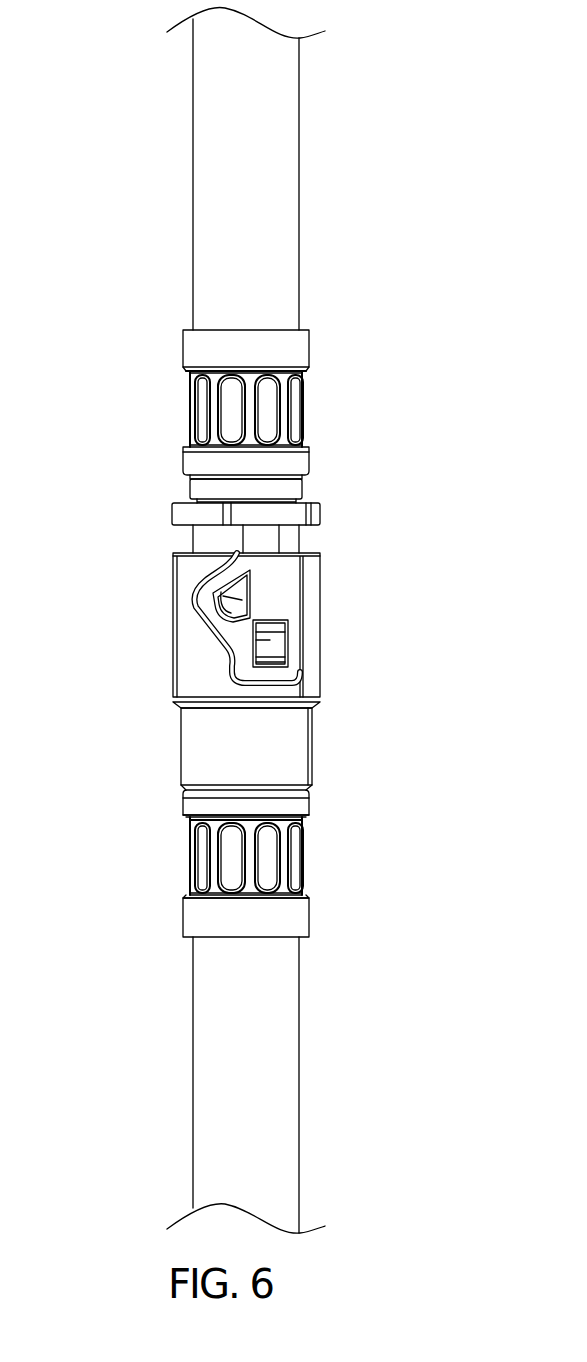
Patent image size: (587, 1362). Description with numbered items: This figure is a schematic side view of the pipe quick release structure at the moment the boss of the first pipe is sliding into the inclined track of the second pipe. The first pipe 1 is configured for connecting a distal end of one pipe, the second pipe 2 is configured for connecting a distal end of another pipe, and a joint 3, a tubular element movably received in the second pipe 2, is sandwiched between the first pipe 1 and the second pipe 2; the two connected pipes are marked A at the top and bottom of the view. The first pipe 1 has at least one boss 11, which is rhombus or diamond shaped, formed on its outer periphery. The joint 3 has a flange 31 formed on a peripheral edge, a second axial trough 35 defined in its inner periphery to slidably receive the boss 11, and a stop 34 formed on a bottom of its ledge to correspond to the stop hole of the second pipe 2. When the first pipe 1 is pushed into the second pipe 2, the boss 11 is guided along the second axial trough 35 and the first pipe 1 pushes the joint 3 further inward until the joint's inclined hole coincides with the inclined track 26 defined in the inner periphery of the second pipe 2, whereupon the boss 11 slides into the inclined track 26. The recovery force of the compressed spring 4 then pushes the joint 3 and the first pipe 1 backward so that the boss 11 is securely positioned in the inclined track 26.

The first pipe 1 is at (200, 490).
The second pipe 2 is at (201, 748).
The joint 3 is at (290, 541).
The spring 4 is at (265, 657).
The boss 11 is at (238, 592).
The inclined track 26 is at (217, 607).
The flange 31 is at (313, 513).
The stop 34 is at (275, 643).
The second axial trough 35 is at (253, 540).
The pipe A is at (277, 285).